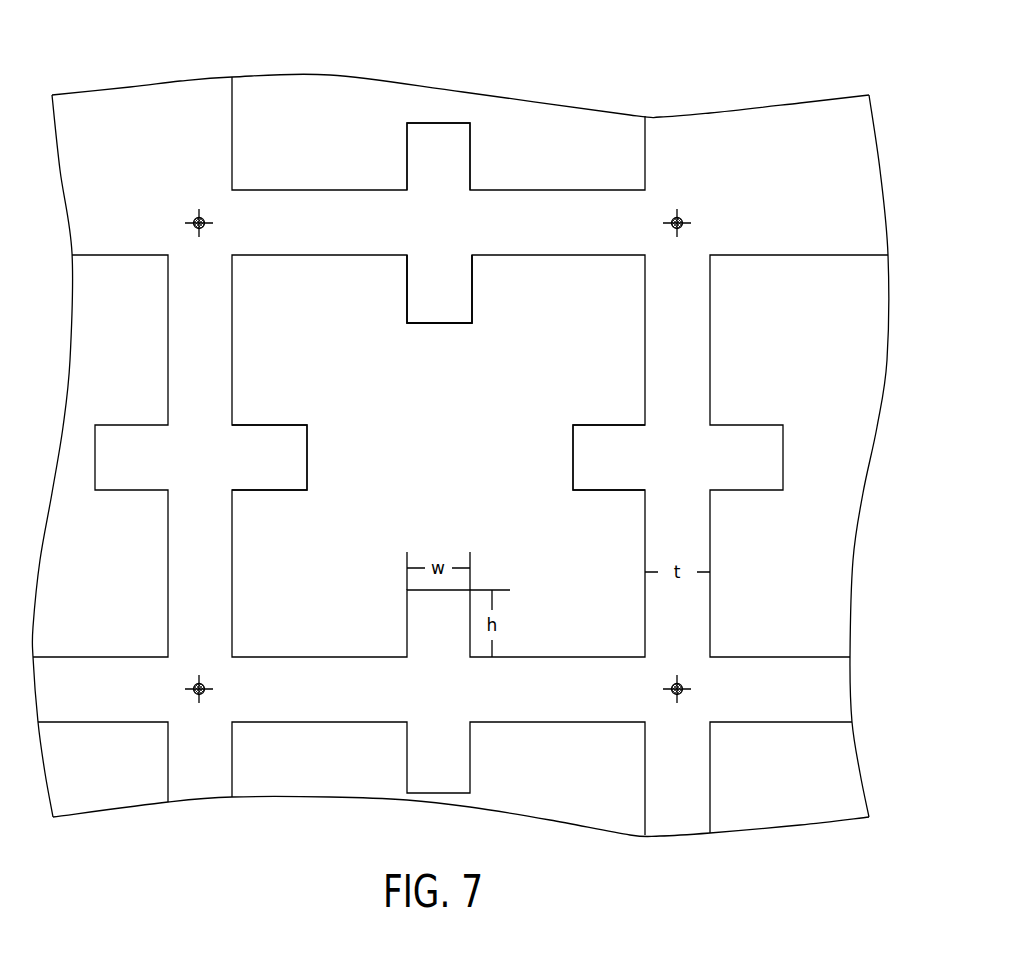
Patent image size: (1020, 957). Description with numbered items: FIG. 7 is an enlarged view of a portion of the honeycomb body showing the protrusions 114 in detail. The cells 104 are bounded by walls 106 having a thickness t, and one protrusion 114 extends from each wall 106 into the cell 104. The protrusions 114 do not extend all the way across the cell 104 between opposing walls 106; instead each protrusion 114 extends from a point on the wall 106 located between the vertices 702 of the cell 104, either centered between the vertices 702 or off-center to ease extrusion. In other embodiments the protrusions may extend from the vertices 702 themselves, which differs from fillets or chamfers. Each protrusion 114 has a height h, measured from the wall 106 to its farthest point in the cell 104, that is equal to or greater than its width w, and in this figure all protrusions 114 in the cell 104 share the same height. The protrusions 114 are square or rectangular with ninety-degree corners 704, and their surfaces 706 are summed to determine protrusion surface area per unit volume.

The cell 104 is at (480, 482).
The wall 106 is at (213, 600).
The protrusion 114 is at (440, 142).
The vertex 702 is at (193, 218).
The corner 704 is at (307, 427).
The surface 706 is at (407, 313).